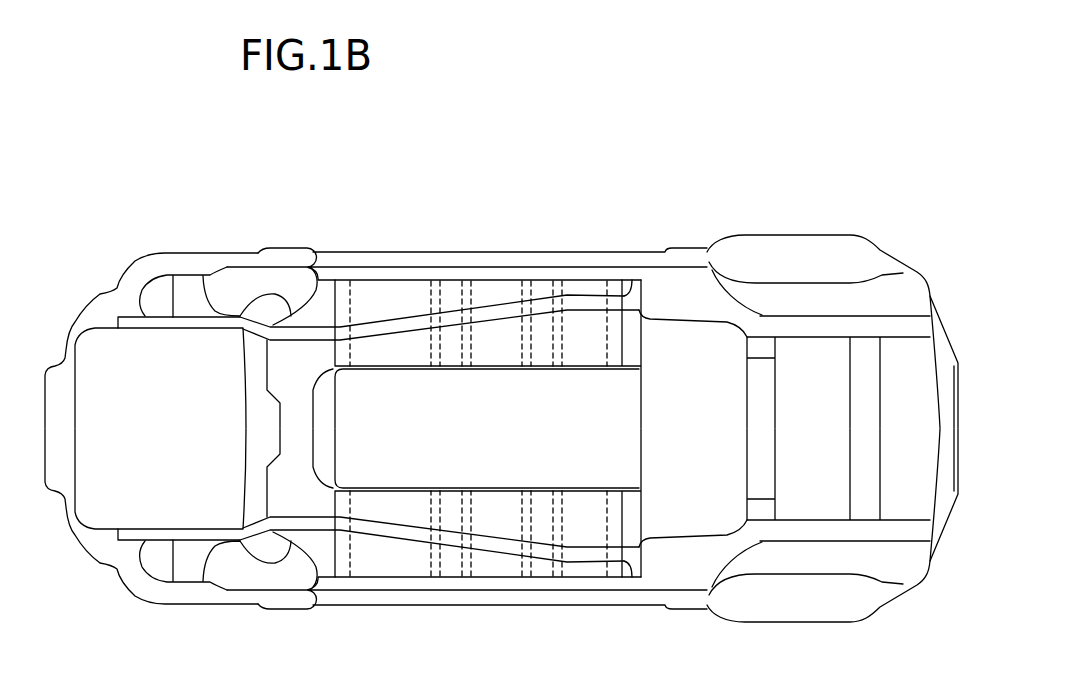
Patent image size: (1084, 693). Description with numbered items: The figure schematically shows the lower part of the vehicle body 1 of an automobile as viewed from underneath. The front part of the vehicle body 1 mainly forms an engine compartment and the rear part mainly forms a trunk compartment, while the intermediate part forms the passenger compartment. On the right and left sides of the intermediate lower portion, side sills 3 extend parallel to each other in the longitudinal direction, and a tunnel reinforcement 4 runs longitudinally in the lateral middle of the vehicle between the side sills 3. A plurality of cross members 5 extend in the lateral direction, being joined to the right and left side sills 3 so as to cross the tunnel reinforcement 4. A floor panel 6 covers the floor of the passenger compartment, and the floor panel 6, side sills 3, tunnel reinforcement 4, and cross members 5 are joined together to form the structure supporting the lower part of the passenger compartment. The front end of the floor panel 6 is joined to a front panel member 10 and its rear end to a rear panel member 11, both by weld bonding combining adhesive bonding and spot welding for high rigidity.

The vehicle body 1 is at (617, 190).
The side sills 3 is at (543, 270).
The tunnel reinforcement 4 is at (618, 433).
The cross members 5 is at (452, 568).
The floor panel 6 is at (392, 558).
The front panel member 10 is at (317, 305).
The rear panel member 11 is at (631, 322).